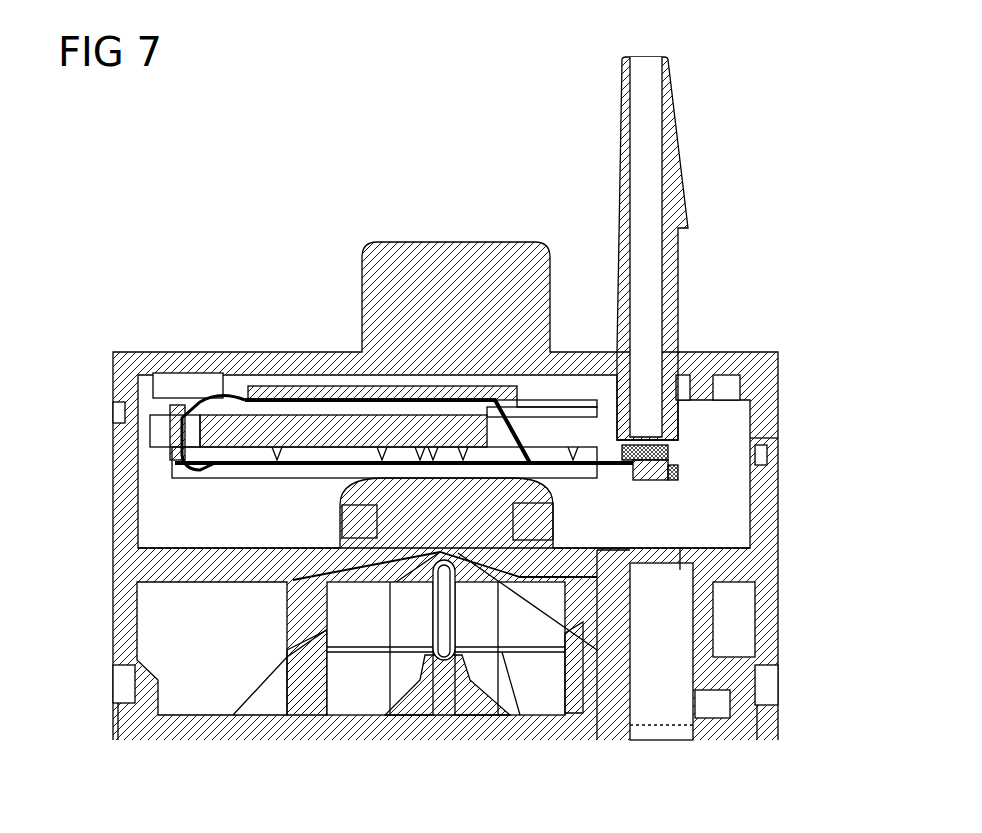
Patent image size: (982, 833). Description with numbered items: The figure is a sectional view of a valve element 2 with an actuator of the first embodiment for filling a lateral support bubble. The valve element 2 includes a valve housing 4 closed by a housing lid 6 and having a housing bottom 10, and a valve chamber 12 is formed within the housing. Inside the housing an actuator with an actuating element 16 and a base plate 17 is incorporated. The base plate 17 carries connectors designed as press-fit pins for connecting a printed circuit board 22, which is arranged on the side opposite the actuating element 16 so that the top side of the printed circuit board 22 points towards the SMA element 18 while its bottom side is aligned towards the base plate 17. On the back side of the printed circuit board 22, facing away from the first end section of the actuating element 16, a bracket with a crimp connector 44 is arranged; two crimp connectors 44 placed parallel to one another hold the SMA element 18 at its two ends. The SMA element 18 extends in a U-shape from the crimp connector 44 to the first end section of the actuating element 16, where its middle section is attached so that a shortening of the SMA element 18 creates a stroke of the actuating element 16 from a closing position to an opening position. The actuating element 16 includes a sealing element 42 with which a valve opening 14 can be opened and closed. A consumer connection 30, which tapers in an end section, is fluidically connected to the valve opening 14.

The valve element 2 is at (712, 278).
The valve housing 4 is at (585, 352).
The housing lid 6 is at (331, 352).
The housing bottom 10 is at (172, 563).
The valve chamber 12 is at (172, 507).
The valve opening 14 is at (648, 440).
The actuating element 16 is at (597, 467).
The base plate 17 is at (273, 386).
The SMA element 18 is at (286, 475).
The printed circuit board 22 is at (234, 433).
The consumer connection 30 is at (672, 130).
The sealing element 42 is at (650, 478).
The crimp connectors 44 is at (197, 395).